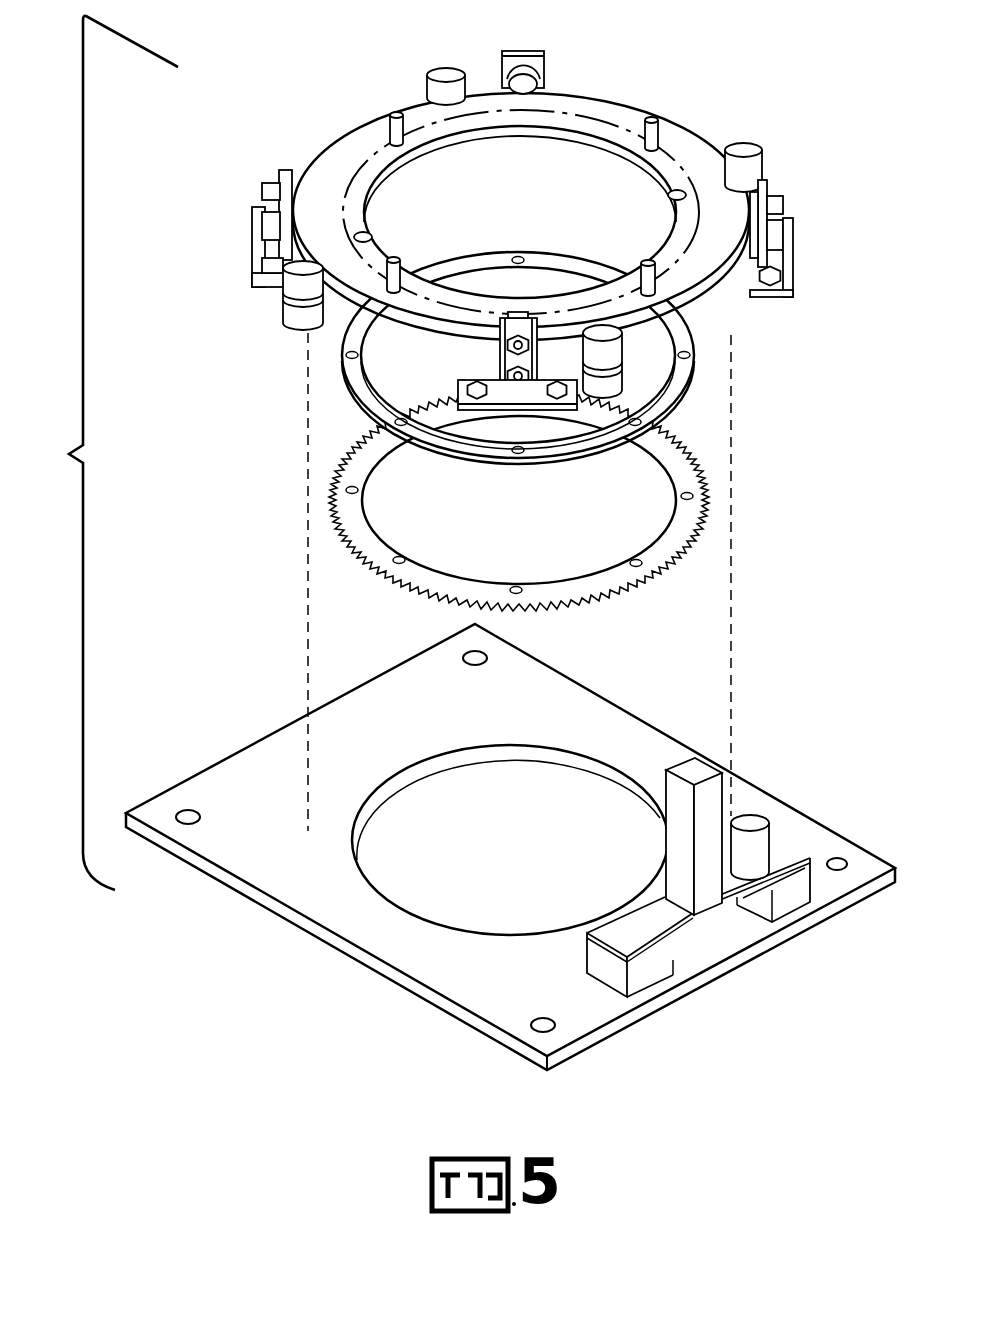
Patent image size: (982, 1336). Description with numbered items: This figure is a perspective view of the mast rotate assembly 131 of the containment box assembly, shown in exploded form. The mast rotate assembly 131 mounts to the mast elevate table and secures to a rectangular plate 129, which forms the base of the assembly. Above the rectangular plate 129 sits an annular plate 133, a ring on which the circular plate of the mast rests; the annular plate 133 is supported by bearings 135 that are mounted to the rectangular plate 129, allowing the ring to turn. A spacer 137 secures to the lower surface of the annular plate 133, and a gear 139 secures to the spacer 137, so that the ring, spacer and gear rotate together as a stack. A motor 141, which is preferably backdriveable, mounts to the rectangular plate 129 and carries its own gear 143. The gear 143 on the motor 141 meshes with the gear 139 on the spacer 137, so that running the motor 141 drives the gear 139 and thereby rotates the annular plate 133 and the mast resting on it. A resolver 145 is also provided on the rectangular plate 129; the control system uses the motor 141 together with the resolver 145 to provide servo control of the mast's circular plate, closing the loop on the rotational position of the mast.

The rectangular plate 129 is at (372, 923).
The mast rotate assembly 131 is at (778, 389).
The annular plate 133 is at (690, 145).
The bearings 135 is at (788, 267).
The spacer 137 is at (672, 404).
The gear 139 is at (700, 530).
The motor 141 is at (700, 770).
The gear 143 is at (698, 931).
The resolver 145 is at (752, 823).